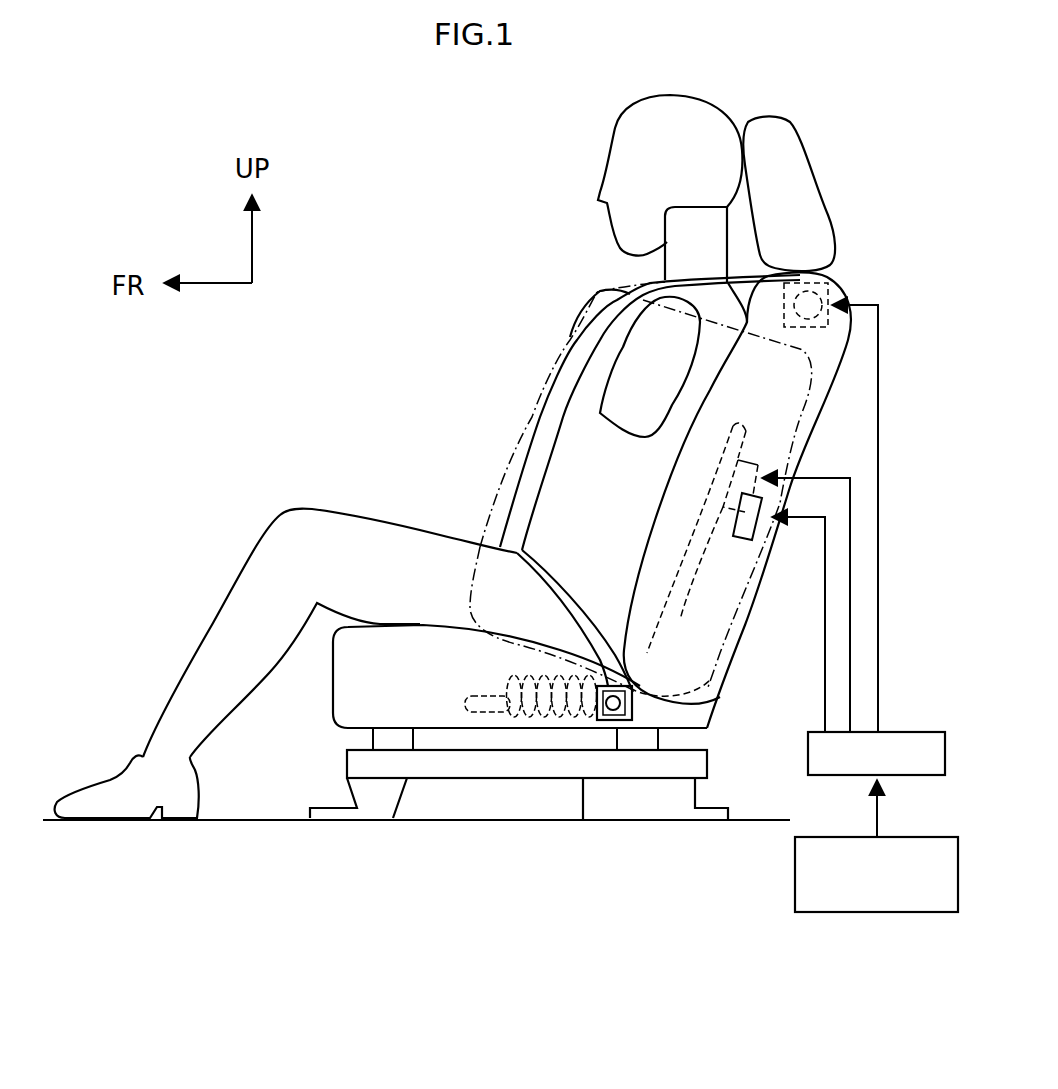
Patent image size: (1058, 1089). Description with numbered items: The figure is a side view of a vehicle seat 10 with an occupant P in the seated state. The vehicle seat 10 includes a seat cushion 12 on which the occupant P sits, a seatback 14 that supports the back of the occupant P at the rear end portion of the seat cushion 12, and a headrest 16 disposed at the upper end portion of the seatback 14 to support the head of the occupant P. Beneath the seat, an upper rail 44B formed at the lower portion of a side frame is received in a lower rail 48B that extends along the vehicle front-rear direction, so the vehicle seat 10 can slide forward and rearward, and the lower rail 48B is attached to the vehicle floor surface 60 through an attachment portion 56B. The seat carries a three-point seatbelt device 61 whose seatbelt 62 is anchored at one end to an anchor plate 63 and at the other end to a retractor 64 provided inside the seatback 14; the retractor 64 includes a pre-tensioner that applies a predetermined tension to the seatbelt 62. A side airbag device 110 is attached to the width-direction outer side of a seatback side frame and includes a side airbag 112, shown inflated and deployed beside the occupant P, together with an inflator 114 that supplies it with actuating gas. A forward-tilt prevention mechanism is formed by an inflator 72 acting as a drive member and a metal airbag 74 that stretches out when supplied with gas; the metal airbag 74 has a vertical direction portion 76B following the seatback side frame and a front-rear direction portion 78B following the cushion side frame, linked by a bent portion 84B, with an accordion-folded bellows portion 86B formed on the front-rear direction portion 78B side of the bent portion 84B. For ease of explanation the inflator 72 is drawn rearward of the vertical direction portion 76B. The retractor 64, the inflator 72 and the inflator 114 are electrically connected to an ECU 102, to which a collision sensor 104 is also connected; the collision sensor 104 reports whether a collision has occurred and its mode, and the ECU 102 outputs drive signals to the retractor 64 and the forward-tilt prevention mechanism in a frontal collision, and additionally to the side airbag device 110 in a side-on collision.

The vehicle seat 10 is at (547, 413).
The seat cushion 12 is at (420, 627).
The seatback 14 is at (820, 403).
The headrest 16 is at (822, 190).
The upper rail 44B is at (383, 738).
The lower rail 48B is at (520, 767).
The attachment portion 56B is at (365, 808).
The vehicle floor surface 60 is at (233, 820).
The seatbelt device 61 is at (557, 371).
The seatbelt 62 is at (533, 475).
The anchor plate 63 is at (632, 692).
The retractor 64 is at (838, 284).
The inflator 72 is at (777, 470).
The metal airbag 74 is at (708, 557).
The vertical direction portion 76B is at (687, 600).
The front-rear direction portion 78B is at (492, 712).
The bent portion 84B is at (630, 687).
The bellows portion 86B is at (557, 716).
The ECU 102 is at (912, 742).
The collision sensor 104 is at (932, 912).
The side airbag device 110 is at (594, 284).
The side airbag 112 is at (640, 483).
The inflator 114 is at (757, 527).
The occupant P is at (608, 347).